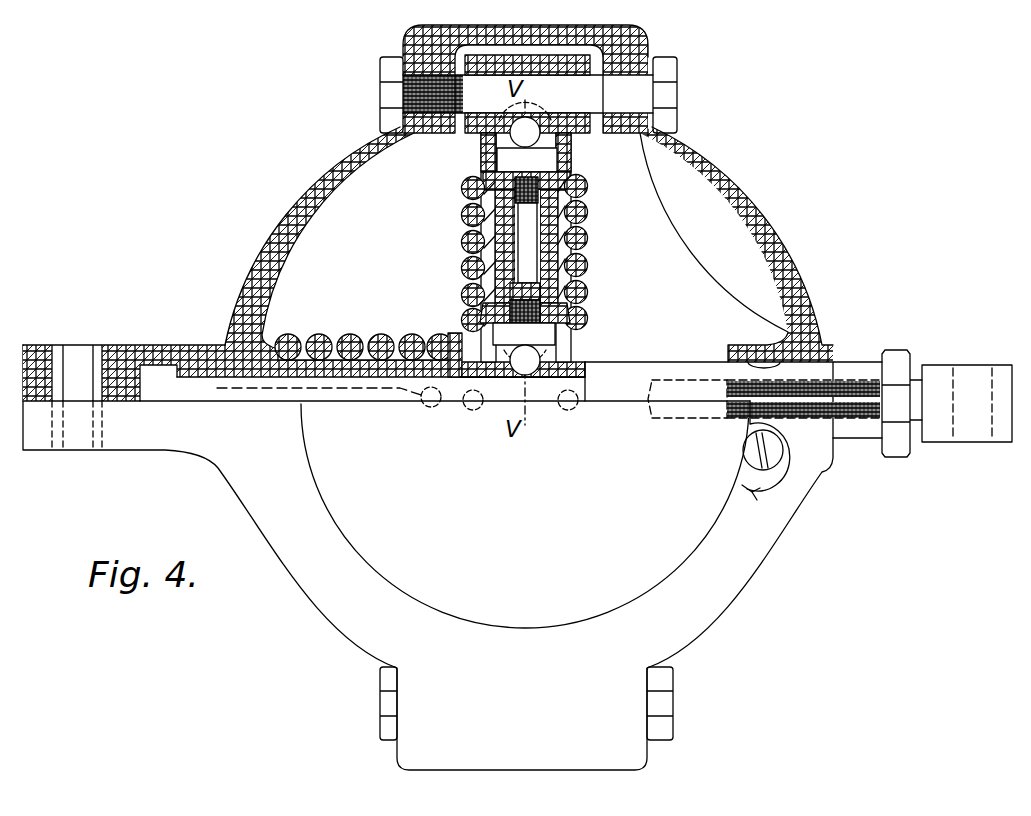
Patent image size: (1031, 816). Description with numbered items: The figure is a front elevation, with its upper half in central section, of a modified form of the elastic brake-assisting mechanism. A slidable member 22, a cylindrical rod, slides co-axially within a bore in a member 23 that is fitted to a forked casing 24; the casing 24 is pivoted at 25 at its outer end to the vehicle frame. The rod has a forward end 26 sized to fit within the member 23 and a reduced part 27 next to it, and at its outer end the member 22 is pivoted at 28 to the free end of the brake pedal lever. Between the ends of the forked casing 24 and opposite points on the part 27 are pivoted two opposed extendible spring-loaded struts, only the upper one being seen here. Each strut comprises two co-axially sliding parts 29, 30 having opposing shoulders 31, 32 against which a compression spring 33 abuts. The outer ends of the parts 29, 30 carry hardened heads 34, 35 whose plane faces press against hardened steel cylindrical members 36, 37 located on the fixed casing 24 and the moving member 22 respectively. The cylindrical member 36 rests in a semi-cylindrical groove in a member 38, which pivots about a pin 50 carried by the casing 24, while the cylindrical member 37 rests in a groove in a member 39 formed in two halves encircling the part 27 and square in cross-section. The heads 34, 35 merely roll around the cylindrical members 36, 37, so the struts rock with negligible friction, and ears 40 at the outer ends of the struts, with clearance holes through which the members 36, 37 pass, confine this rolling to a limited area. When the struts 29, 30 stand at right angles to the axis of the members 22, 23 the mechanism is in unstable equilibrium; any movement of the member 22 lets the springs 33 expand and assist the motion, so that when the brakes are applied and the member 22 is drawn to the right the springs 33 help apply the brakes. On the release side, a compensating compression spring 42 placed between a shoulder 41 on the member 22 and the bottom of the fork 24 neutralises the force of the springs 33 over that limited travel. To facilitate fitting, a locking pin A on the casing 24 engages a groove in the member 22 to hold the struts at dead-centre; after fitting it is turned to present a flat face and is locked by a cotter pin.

The slidable member 22 is at (618, 402).
The member 23 is at (302, 360).
The forked casing 24 is at (275, 241).
The pivot 25 is at (98, 368).
The forward end 26 is at (375, 397).
The reduced part 27 is at (498, 405).
The pivot 28 is at (960, 433).
The sliding part 29 is at (506, 205).
The sliding part 30 is at (585, 220).
The shoulder 31 is at (572, 177).
The shoulder 32 is at (575, 308).
The compression spring 33 is at (466, 259).
The hardened head 34 is at (558, 161).
The hardened head 35 is at (545, 340).
The hardened steel cylindrical member 36 is at (541, 125).
The hardened steel cylindrical member 37 is at (529, 369).
The member 38 is at (477, 128).
The member 39 is at (562, 383).
The ears 40 is at (486, 151).
The shoulder 41 is at (486, 362).
The compensating compression spring 42 is at (381, 338).
The pin 50 is at (550, 90).
The locking pin A is at (774, 457).